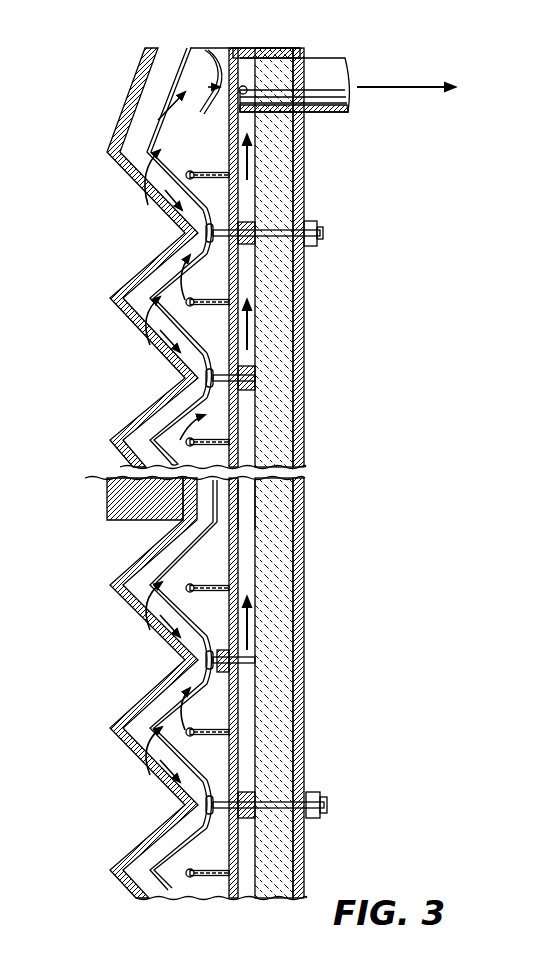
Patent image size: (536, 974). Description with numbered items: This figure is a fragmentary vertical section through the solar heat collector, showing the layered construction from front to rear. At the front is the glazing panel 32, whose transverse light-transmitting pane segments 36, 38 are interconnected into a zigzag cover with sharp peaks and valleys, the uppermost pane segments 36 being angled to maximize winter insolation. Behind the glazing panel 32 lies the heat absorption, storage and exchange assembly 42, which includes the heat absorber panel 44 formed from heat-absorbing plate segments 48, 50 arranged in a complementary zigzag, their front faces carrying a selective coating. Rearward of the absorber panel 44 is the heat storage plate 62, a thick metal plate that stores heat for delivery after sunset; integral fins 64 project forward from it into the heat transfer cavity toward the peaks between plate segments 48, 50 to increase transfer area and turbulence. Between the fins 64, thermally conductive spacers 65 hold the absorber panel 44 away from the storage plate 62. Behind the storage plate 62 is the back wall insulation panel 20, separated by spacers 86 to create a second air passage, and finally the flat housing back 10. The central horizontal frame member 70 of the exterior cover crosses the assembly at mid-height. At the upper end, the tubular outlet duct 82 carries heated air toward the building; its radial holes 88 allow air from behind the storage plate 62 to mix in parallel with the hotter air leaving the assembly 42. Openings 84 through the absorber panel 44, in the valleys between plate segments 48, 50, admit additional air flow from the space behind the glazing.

The housing back 10 is at (308, 383).
The back wall insulation panel 20 is at (277, 547).
The glazing panel 32 is at (137, 416).
The light-transmitting pane segment 36 is at (148, 125).
The light-transmitting pane segment 38 is at (128, 192).
The heat absorption, storage and exchange assembly 42 is at (160, 212).
The heat absorber panel 44 is at (120, 440).
The heat-absorbing plate segment 48 is at (197, 543).
The heat-absorbing plate segment 50 is at (153, 637).
The heat storage plate 62 is at (242, 497).
The fin 64 is at (195, 170).
The spacer 65 is at (200, 257).
The central horizontal frame member 70 is at (108, 497).
The outlet duct 82 is at (322, 75).
The opening 84 is at (206, 60).
The spacer 86 is at (285, 262).
The radial hole 88 is at (250, 53).